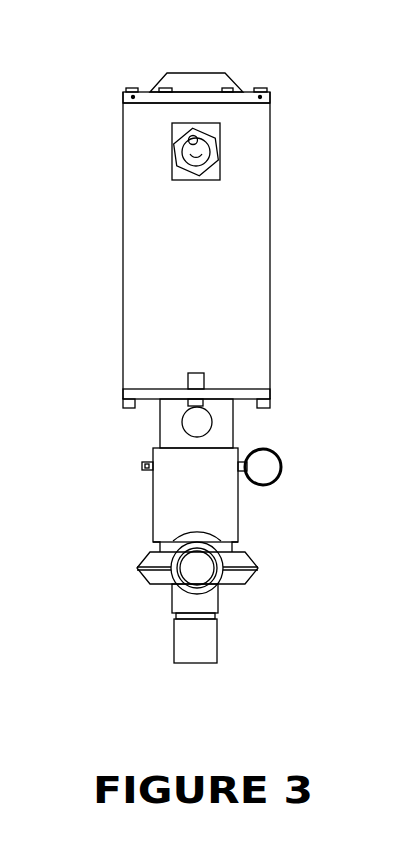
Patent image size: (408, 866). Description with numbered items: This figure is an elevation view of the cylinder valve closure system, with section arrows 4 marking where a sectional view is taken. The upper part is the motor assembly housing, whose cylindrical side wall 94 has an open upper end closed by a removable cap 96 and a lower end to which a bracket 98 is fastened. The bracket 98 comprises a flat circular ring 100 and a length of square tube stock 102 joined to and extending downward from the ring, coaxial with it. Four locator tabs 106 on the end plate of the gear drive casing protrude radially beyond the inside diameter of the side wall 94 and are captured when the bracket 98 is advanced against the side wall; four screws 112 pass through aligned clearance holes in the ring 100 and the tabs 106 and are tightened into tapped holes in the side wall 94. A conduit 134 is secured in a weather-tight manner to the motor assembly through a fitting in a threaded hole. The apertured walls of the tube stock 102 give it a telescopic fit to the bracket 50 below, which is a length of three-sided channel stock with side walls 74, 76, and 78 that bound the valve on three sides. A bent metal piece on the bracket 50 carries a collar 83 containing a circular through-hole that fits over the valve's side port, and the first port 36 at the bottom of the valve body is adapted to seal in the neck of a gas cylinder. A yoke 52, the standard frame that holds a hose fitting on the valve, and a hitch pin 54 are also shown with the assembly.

The section line 4- 4 is at (180, 21).
The first port 36 is at (210, 648).
The bracket 50 is at (147, 544).
The yoke 52 is at (265, 567).
The hitch pin 54 is at (145, 468).
The side wall 74 is at (152, 512).
The side wall 76 is at (217, 518).
The side wall 78 is at (238, 503).
The collar 83 is at (173, 587).
The cylindrical side wall 94 is at (270, 250).
The removable cap 96 is at (230, 82).
The bracket 98 is at (270, 393).
The flat circular ring 100 is at (147, 393).
The square tube stock 102 is at (159, 428).
The locator tabs 106 is at (197, 382).
The screws 112 is at (128, 408).
The conduit 134 is at (200, 143).